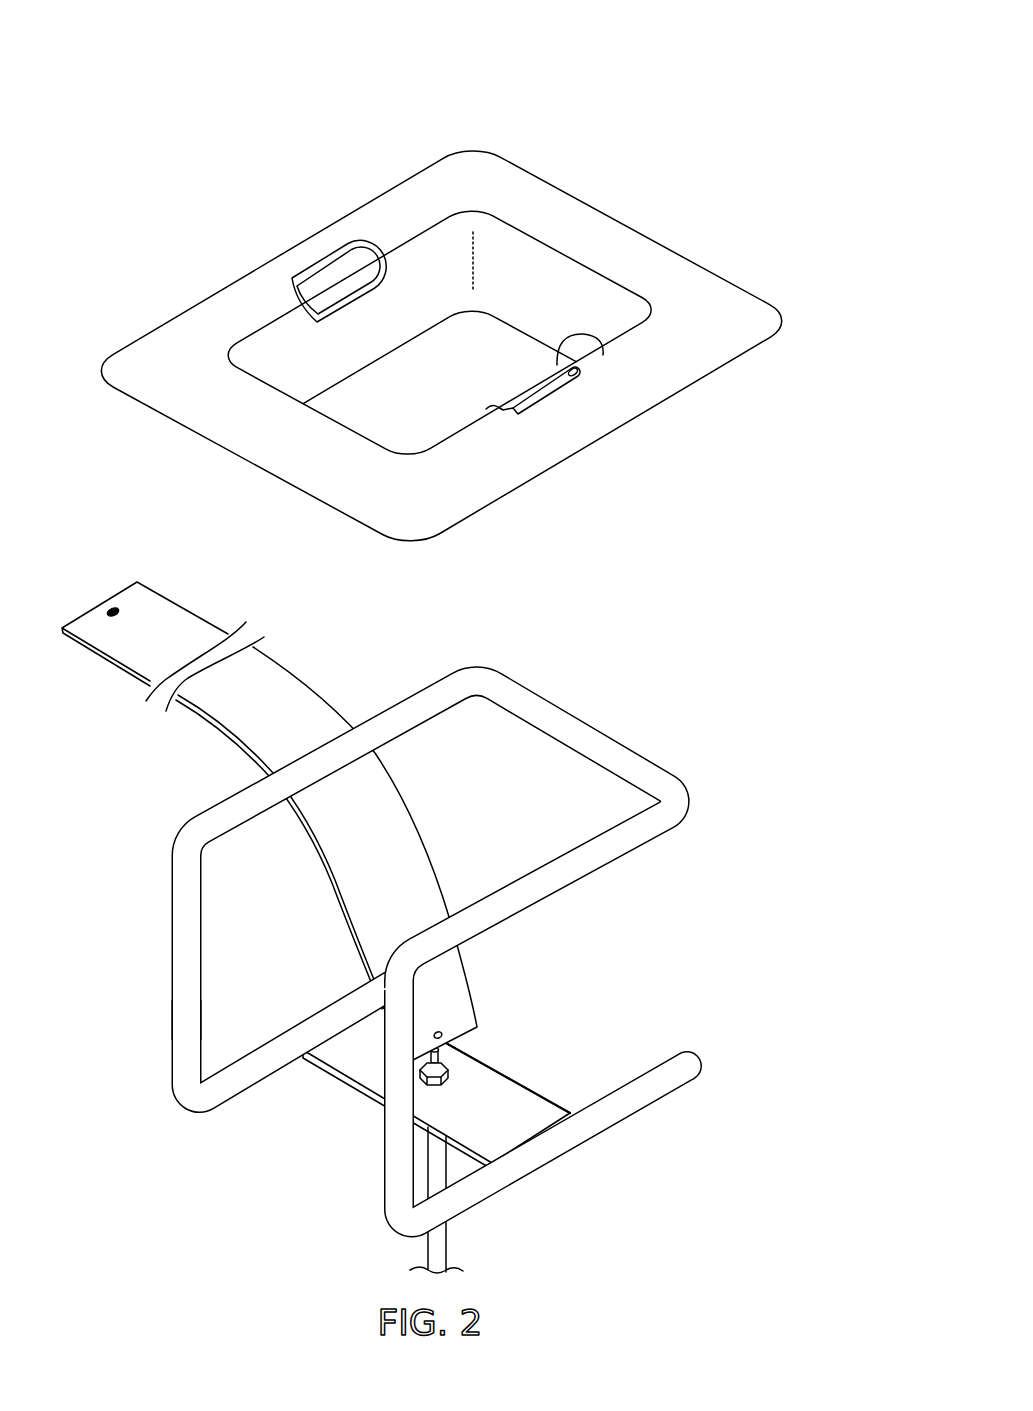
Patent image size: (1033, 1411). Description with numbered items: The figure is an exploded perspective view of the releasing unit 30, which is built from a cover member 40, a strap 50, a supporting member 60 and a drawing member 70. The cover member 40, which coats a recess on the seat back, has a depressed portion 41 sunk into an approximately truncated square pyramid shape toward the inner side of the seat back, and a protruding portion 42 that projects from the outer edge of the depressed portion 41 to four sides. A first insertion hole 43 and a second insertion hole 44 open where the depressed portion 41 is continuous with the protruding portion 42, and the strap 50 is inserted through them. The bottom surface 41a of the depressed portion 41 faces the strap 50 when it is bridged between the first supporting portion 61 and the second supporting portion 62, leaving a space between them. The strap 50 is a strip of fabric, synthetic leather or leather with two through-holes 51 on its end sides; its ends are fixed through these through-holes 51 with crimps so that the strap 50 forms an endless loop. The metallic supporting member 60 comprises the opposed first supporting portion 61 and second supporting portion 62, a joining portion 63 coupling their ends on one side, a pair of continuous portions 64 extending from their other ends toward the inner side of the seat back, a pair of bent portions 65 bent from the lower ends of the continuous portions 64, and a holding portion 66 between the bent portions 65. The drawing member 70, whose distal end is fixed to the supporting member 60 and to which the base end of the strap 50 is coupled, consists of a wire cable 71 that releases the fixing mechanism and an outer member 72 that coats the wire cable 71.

The releasing unit 30 is at (779, 100).
The cover member 40 is at (572, 150).
The depressed portion 41 is at (439, 332).
The bottom surface 41a is at (485, 360).
The protruding portion 42 is at (653, 275).
The first insertion hole 43 is at (606, 350).
The second insertion hole 44 is at (367, 254).
The strap 50 is at (342, 645).
The through-holes 51 is at (95, 610).
The supporting member 60 is at (572, 665).
The first supporting portion 61 is at (569, 863).
The second supporting portion 62 is at (373, 737).
The joining portion 63 is at (583, 737).
The continuous portions 64 is at (193, 968).
The bent portions 65 is at (323, 1021).
The holding portion 66 is at (523, 1117).
The drawing member 70 is at (517, 1033).
The wire cable 71 is at (432, 1057).
The outer member 72 is at (450, 1067).